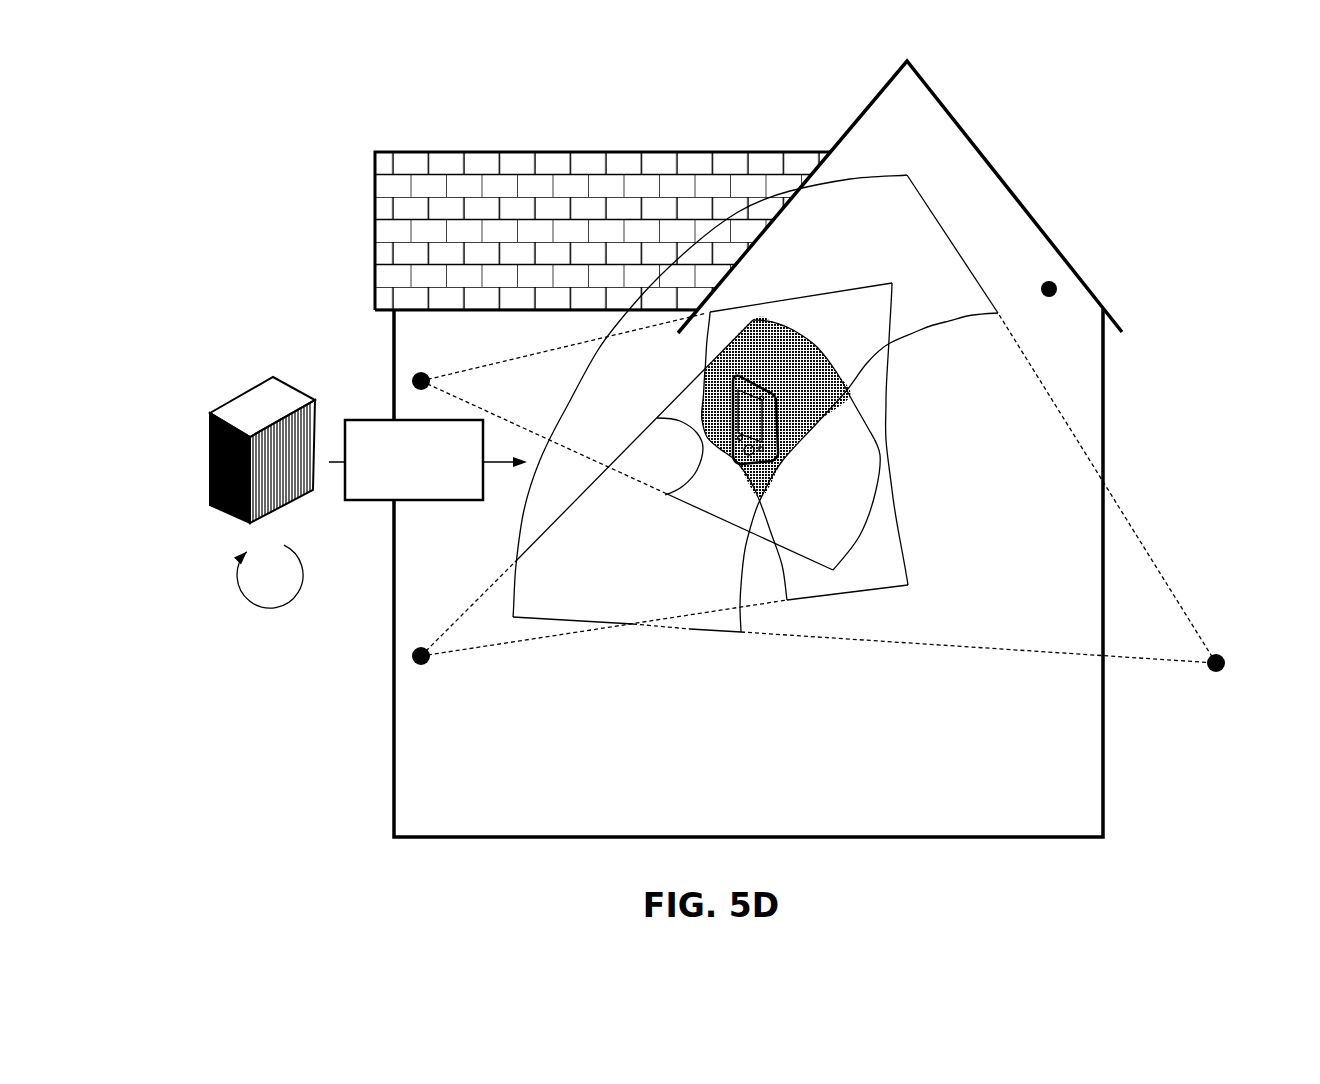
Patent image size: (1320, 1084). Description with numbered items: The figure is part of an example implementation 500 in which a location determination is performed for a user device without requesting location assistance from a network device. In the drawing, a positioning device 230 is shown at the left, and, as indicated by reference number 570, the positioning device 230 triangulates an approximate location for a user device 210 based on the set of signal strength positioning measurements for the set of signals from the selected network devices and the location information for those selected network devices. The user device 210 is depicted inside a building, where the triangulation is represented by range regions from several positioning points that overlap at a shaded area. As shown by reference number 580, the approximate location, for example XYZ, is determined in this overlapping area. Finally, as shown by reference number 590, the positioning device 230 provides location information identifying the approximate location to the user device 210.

The example implementation 500 is at (266, 126).
The positioning device 230 is at (245, 366).
The location information provision 590 is at (437, 502).
The triangulation of approximate location 570 is at (253, 624).
The approximate location 580 is at (1173, 132).
The user device 210 is at (723, 465).